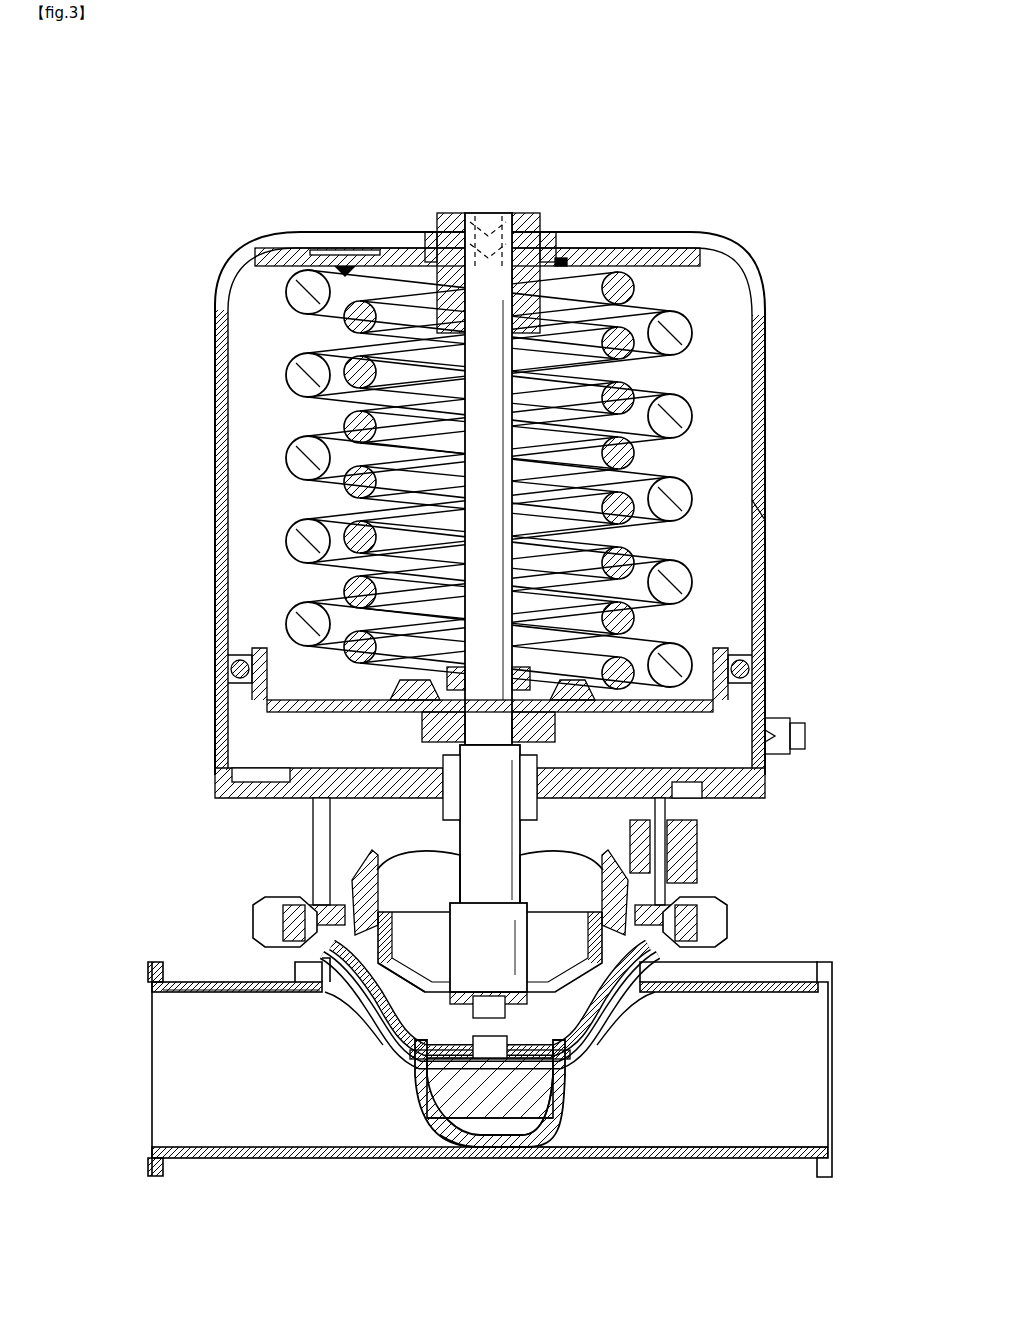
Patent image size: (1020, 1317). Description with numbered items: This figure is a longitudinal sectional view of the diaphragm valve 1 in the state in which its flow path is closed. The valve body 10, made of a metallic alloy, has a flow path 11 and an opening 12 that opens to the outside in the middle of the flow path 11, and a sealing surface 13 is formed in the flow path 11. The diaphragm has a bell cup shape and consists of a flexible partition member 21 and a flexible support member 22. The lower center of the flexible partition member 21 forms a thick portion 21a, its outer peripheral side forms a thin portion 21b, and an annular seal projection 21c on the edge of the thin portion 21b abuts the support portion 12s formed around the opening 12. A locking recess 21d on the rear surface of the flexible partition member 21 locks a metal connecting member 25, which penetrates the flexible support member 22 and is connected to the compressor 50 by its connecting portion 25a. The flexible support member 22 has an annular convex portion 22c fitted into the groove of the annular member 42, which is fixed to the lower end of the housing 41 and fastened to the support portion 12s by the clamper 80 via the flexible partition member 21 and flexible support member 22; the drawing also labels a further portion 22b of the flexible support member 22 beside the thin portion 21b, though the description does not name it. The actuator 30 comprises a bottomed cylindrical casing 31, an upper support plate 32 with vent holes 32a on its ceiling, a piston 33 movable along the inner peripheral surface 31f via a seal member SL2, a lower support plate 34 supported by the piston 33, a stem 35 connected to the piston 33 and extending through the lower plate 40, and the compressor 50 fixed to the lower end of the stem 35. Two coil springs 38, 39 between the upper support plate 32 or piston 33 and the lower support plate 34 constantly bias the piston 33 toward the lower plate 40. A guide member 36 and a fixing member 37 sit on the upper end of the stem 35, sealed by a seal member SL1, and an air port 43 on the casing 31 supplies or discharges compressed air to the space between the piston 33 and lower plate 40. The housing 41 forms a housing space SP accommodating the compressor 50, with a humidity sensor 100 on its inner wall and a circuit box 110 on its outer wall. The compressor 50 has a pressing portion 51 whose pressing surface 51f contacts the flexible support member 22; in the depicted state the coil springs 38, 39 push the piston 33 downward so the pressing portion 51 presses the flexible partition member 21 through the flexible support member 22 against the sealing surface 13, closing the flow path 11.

The diaphragm valve 1 is at (692, 128).
The valve body 10 is at (253, 1158).
The flow path 11 is at (777, 1073).
The opening 12 is at (636, 1010).
The support portion 12s is at (318, 968).
The sealing surface 13 is at (588, 1135).
The flexible partition member 21 is at (567, 1090).
The thick portion 21a is at (463, 1123).
The thin portion 21b is at (392, 1003).
The seal projection 21c is at (295, 992).
The locking recess 21d is at (556, 1105).
The flexible support member 22 is at (595, 978).
The diaphragm outer layer 22b is at (398, 1025).
The annular convex portion 22c is at (318, 898).
The connecting member 25 is at (503, 1090).
The connecting portion 25a is at (413, 1050).
The actuator 30 is at (770, 438).
The casing 31 is at (765, 382).
The inner peripheral surface 31f is at (757, 512).
The upper support plate 32 is at (312, 252).
The vent holes 32a is at (347, 262).
The piston 33 is at (730, 645).
The lower support plate 34 is at (590, 722).
The stem 35 is at (540, 232).
The guide member 36 is at (437, 234).
The fixing member 37 is at (457, 216).
The coil spring 38 is at (665, 292).
The coil spring 39 is at (690, 312).
The lower plate 40 is at (700, 790).
The housing 41 is at (312, 870).
The annular member 42 is at (300, 920).
The air port 43 is at (785, 722).
The compressor 50 is at (398, 860).
The pressing portion 51 is at (413, 990).
The pressing surface 51f is at (377, 990).
The clamper 80 is at (742, 920).
The humidity sensor 100 is at (630, 845).
The circuit box 110 is at (697, 850).
The seal member SL1 is at (600, 268).
The seal member SL2 is at (745, 665).
The housing space SP is at (330, 798).